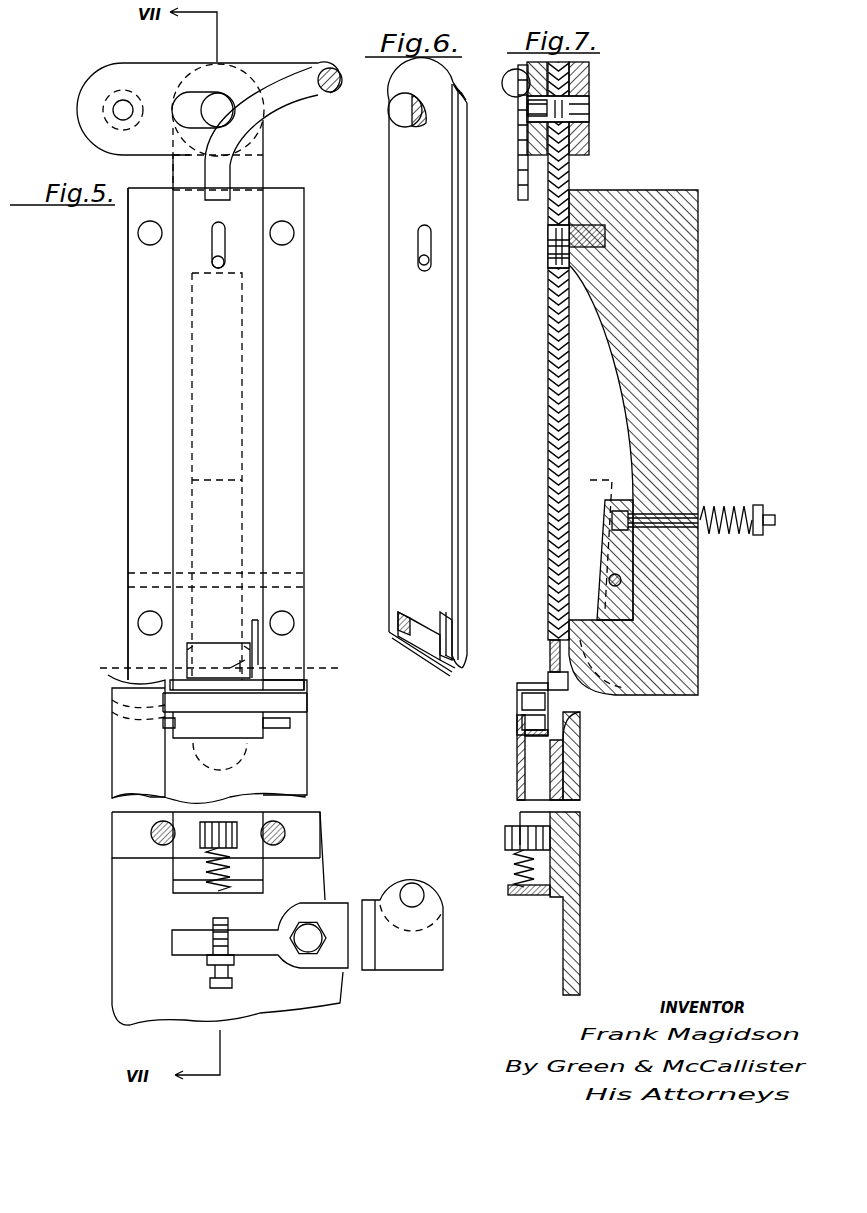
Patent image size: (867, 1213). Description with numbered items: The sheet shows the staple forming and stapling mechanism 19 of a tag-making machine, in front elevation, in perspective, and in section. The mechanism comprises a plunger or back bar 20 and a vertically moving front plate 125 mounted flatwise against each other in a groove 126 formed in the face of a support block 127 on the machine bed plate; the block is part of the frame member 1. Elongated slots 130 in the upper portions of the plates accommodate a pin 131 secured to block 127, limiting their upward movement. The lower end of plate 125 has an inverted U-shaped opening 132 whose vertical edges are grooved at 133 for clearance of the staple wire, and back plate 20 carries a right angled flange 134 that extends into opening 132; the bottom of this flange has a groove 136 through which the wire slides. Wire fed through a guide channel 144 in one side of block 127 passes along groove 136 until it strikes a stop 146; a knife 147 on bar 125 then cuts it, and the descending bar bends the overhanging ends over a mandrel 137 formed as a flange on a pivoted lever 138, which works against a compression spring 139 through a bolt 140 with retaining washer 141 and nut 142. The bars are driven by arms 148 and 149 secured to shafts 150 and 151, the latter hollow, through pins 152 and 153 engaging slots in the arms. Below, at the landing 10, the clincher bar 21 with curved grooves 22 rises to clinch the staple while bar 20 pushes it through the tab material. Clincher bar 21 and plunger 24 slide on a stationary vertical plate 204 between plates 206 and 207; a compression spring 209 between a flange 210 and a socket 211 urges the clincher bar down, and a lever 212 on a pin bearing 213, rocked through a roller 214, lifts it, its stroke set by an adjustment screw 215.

In FIG. 5, the door frame member 1 is at (296, 306).
In FIG. 5, the landing 10 is at (235, 715).
In FIG. 5, the staple forming and stapling mechanism 19 is at (185, 465).
In FIG. 6, the staple forming and stapling mechanism 19 is at (469, 376).
In FIG. 7, the staple forming and stapling mechanism 19 is at (540, 376).
In FIG. 6, the plunger or back plate 20 is at (467, 438).
In FIG. 7, the plunger or back plate 20 is at (569, 437).
In FIG. 5, the clincher bar 21 is at (183, 866).
In FIG. 7, the clincher bar 21 is at (580, 765).
In FIG. 5, the curved grooves 22 is at (220, 756).
In FIG. 7, the curved grooves 22 is at (575, 714).
In FIG. 7, the plunger or bar 24 is at (509, 776).
In FIG. 6, the vertically moving plate or front bar 125 is at (427, 367).
In FIG. 7, the vertically moving plate or front bar 125 is at (555, 468).
In FIG. 5, the groove 126 is at (263, 425).
In FIG. 5, the support block 127 is at (128, 519).
In FIG. 7, the support block 127 is at (665, 196).
In FIG. 6, the elongated slot 130 is at (418, 248).
In FIG. 7, the elongated slot 130 is at (555, 238).
In FIG. 5, the pin 131 is at (215, 262).
In FIG. 5, the opening 132 is at (200, 651).
In FIG. 6, the opening 132 is at (428, 640).
In FIG. 6, the grooves 133 is at (402, 624).
In FIG. 5, the right angled flange 134 is at (255, 665).
In FIG. 6, the right angled flange 134 is at (445, 665).
In FIG. 7, the right angled flange 134 is at (550, 652).
In FIG. 7, the groove 136 is at (552, 674).
In FIG. 5, the mandrel 137 is at (306, 686).
In FIG. 7, the mandrel 137 is at (548, 682).
In FIG. 5, the pivoted lever 138 is at (242, 480).
In FIG. 7, the pivoted lever 138 is at (608, 566).
In FIG. 7, the compression spring 139 is at (735, 527).
In FIG. 7, the bolt 140 is at (690, 550).
In FIG. 7, the retaining washer 141 is at (758, 505).
In FIG. 7, the nut 142 is at (775, 514).
In FIG. 5, the guide channel 144 is at (273, 667).
In FIG. 5, the stop 146 is at (116, 667).
In FIG. 5, the knife 147 is at (260, 645).
In FIG. 6, the knife 147 is at (452, 648).
In FIG. 7, the knife 147 is at (548, 637).
In FIG. 5, the arm 148 is at (110, 70).
In FIG. 7, the arm 148 is at (535, 66).
In FIG. 7, the arm 149 is at (582, 62).
In FIG. 5, the shaft 150 is at (118, 113).
In FIG. 5, the hollow shaft 151 is at (105, 103).
In FIG. 5, the pin 152 is at (212, 118).
In FIG. 6, the pin 152 is at (404, 114).
In FIG. 7, the pin 152 is at (528, 107).
In FIG. 7, the pin 153 is at (589, 104).
In FIG. 7, the stationary vertical plate 204 is at (580, 860).
In FIG. 5, the plate 206 is at (296, 756).
In FIG. 5, the plate 207 is at (128, 774).
In FIG. 5, the compression spring 209 is at (232, 872).
In FIG. 7, the compression spring 209 is at (514, 868).
In FIG. 5, the flange 210 is at (183, 888).
In FIG. 7, the flange 210 is at (508, 891).
In FIG. 5, the socket 211 is at (205, 835).
In FIG. 7, the socket 211 is at (505, 835).
In FIG. 5, the lever 212 is at (340, 962).
In FIG. 5, the pin bearing 213 is at (310, 945).
In FIG. 5, the roller 214 is at (408, 870).
In FIG. 5, the adjustment screw 215 is at (212, 984).